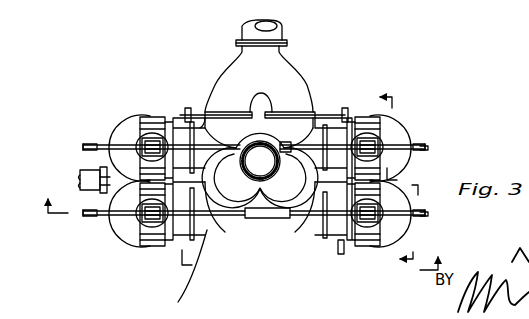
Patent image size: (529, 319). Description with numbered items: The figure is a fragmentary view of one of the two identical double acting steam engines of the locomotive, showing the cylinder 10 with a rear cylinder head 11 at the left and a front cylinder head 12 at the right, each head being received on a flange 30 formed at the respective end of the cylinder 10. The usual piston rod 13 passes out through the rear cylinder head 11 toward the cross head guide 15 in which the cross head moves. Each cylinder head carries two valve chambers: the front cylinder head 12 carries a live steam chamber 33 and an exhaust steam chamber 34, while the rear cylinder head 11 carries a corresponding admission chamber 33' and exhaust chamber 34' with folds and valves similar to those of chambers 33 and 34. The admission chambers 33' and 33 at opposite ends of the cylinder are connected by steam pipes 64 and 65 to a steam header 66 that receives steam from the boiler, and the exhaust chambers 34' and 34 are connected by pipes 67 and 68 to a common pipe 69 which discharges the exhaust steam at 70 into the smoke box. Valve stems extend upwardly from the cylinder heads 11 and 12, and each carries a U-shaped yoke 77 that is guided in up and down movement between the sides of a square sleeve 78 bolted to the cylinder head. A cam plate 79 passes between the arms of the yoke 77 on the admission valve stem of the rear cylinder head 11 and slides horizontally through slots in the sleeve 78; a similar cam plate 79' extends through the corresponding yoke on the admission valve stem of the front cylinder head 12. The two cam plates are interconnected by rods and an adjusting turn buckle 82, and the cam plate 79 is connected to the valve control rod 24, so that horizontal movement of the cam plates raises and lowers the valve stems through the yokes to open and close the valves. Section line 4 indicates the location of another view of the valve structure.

The section line 4- 4 is at (300, 182).
The cylinder 10 is at (252, 245).
The rear cylinder head 11 is at (93, 137).
The front cylinder head 12 is at (418, 202).
The piston rod 13 is at (88, 172).
The cross head guide 15 is at (241, 226).
The valve control rod 24 is at (88, 215).
The flange 30 is at (186, 108).
The live steam chamber 33 is at (408, 211).
The admission chamber 33' is at (115, 221).
The exhaust steam chamber 34 is at (404, 143).
The exhaust chamber 34' is at (121, 139).
The steam pipe 64 is at (187, 250).
The steam pipe 65 is at (307, 232).
The steam pipe or header 66 is at (293, 128).
The pipe 67 is at (205, 127).
The pipe 68 is at (345, 108).
The common pipe 69 is at (283, 75).
The discharge 70 is at (272, 30).
The U-shaped yoke 77 is at (155, 222).
The square sleeve 78 is at (148, 225).
The cam plate 79 is at (258, 197).
The cam plate 79' is at (369, 208).
The adjusting turn buckle 82 is at (268, 222).